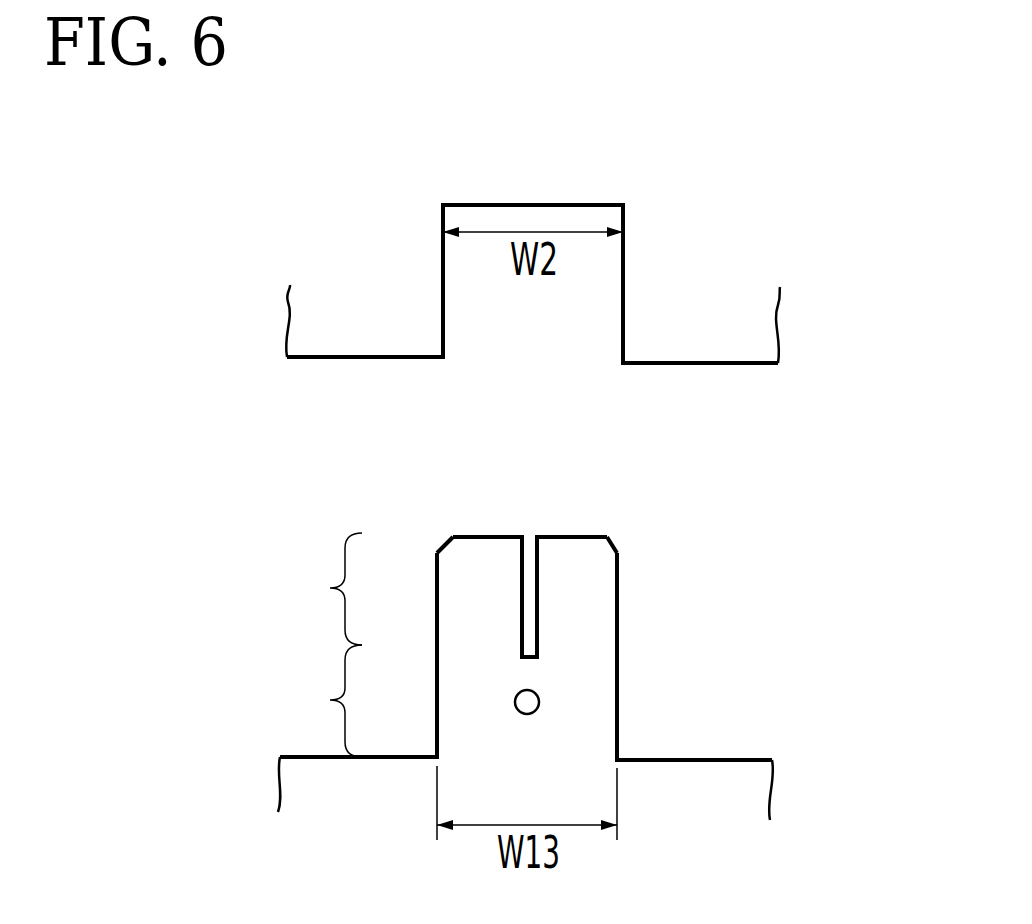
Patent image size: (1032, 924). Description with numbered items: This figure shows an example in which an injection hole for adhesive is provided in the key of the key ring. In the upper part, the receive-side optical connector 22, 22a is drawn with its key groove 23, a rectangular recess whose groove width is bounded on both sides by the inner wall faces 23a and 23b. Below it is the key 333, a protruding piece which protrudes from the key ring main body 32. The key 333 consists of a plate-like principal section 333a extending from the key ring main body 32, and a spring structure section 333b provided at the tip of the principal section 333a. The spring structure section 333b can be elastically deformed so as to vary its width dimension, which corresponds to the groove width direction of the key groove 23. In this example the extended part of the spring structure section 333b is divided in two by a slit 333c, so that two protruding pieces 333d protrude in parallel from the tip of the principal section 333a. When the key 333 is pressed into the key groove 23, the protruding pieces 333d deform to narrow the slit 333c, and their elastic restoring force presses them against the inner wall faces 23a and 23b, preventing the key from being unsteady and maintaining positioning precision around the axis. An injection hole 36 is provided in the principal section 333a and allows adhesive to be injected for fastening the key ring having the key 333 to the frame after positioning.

The receive-side optical connector 22 is at (264, 350).
The receive-side optical connector 22a is at (298, 358).
The key groove 23 is at (607, 280).
The inner wall face 23a is at (443, 262).
The inner wall face 23b is at (624, 310).
The key ring main body 32 is at (753, 760).
The key 333 is at (632, 645).
The principal section 333a is at (299, 701).
The spring structure section 333b is at (299, 589).
The slit 333c is at (525, 537).
The protruding pieces 333d is at (441, 581).
The injection hole 36 is at (539, 700).